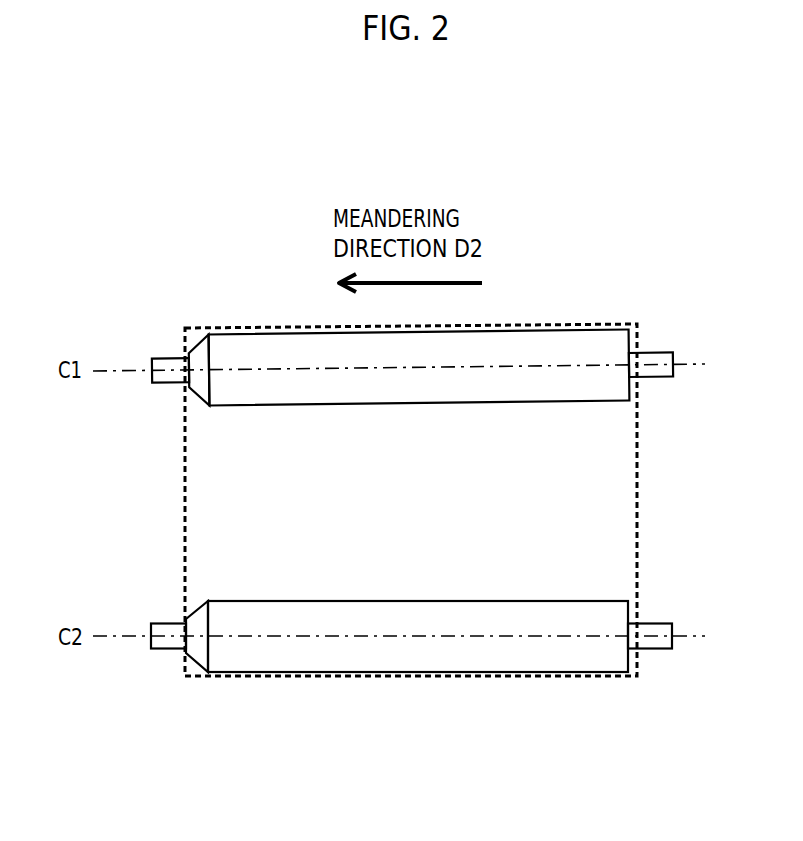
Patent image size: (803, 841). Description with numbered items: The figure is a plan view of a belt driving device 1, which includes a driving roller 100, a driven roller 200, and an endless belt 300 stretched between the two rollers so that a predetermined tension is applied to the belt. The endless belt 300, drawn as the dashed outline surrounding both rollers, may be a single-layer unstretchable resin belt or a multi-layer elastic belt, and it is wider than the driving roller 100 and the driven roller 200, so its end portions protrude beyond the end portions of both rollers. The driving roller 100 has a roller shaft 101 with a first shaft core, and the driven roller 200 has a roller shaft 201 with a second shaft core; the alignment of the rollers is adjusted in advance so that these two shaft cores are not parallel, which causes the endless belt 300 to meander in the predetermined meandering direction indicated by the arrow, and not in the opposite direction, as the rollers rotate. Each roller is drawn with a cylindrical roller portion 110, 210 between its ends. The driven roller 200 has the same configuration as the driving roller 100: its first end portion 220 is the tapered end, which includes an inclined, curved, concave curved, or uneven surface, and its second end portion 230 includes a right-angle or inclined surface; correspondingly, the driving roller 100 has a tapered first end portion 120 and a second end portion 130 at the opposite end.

The belt driving device 1 is at (537, 182).
The driving roller 100 is at (398, 308).
The roller shaft 101 is at (160, 366).
The first roller body 110 is at (288, 340).
The first roller tapered end portion 120 is at (195, 322).
The first roller other end portion 130 is at (625, 317).
The driven roller 200 is at (400, 696).
The roller shaft 201 is at (157, 643).
The second roller body 210 is at (430, 655).
The first end portion 220 is at (202, 687).
The second end portion 230 is at (627, 687).
The endless belt 300 is at (615, 496).